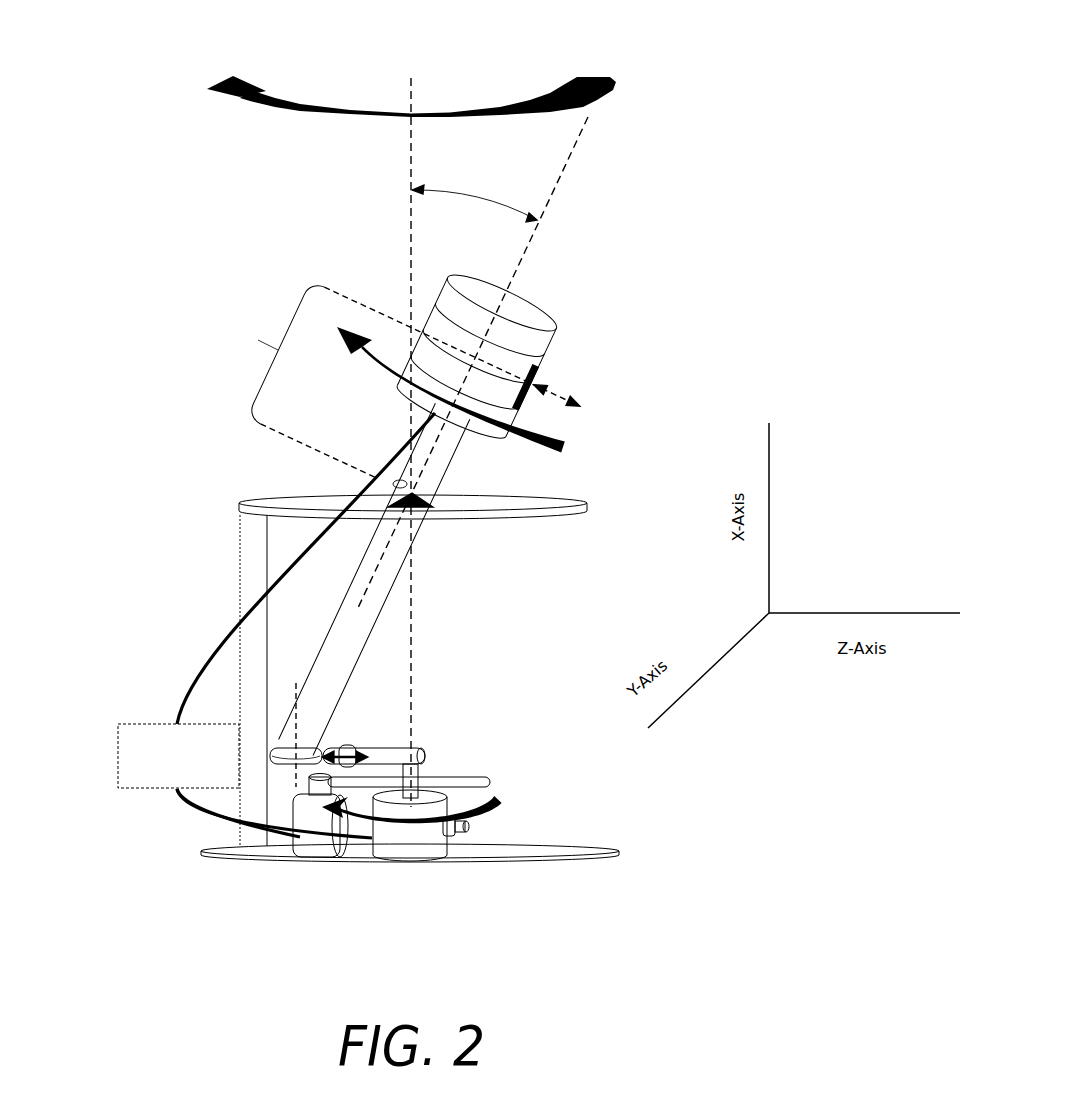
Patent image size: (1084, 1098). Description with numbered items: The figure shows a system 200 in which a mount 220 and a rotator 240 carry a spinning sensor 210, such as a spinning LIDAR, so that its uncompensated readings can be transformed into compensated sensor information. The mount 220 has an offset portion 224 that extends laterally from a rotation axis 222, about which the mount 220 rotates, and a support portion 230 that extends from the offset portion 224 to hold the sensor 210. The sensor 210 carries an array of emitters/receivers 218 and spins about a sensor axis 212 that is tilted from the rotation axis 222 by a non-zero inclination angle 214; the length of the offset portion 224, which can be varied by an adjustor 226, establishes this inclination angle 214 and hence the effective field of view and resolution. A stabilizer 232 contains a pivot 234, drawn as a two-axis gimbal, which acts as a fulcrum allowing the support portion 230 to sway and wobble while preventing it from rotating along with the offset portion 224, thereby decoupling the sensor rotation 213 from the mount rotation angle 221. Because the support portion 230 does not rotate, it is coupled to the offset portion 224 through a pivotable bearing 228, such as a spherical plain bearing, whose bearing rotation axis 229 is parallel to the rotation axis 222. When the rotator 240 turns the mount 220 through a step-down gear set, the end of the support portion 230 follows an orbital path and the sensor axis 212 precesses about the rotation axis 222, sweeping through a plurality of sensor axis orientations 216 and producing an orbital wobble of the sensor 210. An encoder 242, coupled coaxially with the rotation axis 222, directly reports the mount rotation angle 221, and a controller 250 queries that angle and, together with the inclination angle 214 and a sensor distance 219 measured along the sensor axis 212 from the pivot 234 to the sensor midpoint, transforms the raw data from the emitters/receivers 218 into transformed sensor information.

The system 200 is at (208, 208).
The sensor 210 is at (557, 324).
The sensor axis 212 is at (562, 175).
The sensor rotation 213 is at (562, 445).
The inclination angle 214 is at (478, 187).
The sensor axis orientations 216 is at (593, 75).
The array of emitters/receivers 218 is at (540, 368).
The sensor distance 219 is at (238, 331).
The mount 220 is at (235, 460).
The mount rotation angle 221 is at (490, 800).
The rotation axis 222 is at (413, 102).
The offset portion 224 is at (387, 748).
The adjustor 226 is at (350, 743).
The bearing 228 is at (273, 750).
The bearing rotation axis 229 is at (295, 683).
The support portion 230 is at (347, 630).
The stabilizer 232 is at (252, 518).
The pivot 234 is at (392, 498).
The rotator 240 is at (317, 845).
The encoder 242 is at (417, 840).
The controller 250 is at (276, 625).